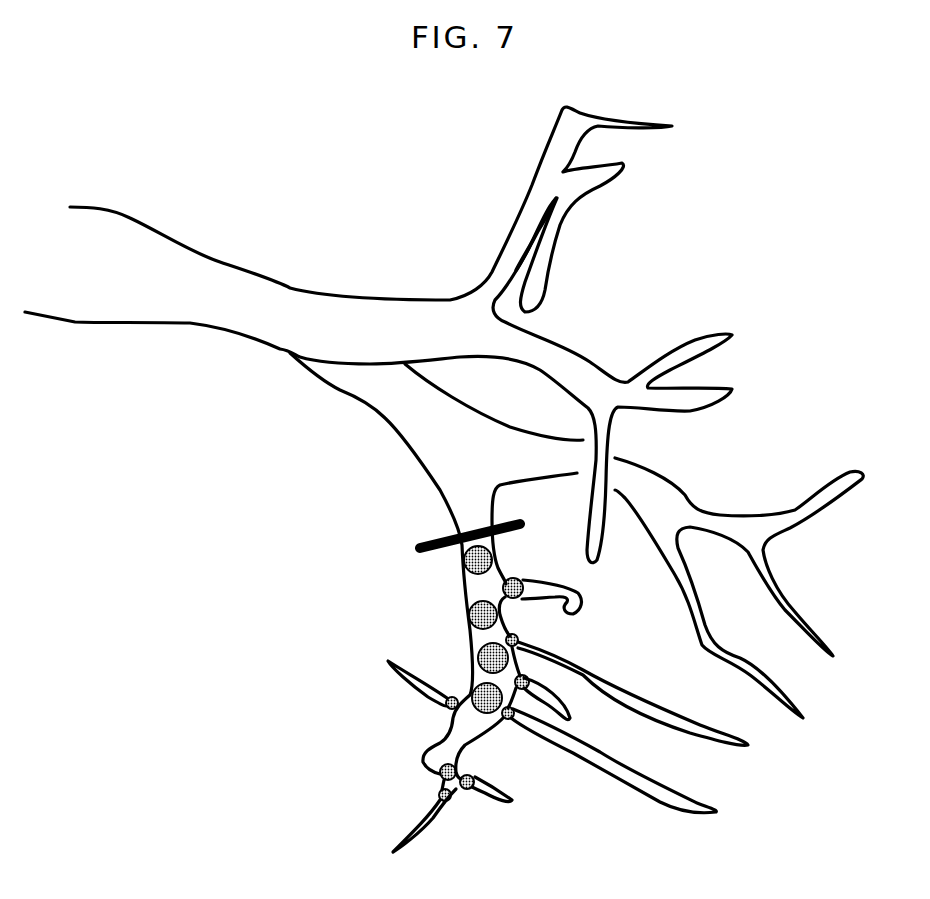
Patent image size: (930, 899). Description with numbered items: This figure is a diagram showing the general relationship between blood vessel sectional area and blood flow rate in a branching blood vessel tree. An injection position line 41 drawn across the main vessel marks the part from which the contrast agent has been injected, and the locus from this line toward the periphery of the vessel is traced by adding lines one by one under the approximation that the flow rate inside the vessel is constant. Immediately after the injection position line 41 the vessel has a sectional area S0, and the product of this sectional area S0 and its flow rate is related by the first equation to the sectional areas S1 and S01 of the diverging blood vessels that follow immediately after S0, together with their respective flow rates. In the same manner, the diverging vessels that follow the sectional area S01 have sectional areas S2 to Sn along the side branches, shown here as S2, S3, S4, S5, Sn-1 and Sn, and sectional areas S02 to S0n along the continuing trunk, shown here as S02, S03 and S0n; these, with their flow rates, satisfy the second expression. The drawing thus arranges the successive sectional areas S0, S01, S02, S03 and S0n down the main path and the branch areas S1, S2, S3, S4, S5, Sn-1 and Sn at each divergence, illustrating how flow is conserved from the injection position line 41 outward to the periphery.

The injection position line 41 is at (433, 546).
The sectional area of the blood vessel immediately after the injection position line S0 is at (463, 557).
The sectional area of diverging blood vessel S01 is at (468, 611).
The sectional area of diverging blood vessel S02 is at (477, 652).
The sectional area of diverging blood vessel S03 is at (471, 690).
The sectional area of diverging blood vessel S0n is at (440, 769).
The sectional area of diverging blood vessel S1 is at (517, 578).
The sectional area of diverging blood vessel S2 is at (518, 640).
The sectional area of diverging blood vessel S3 is at (529, 680).
The sectional area of diverging blood vessel S4 is at (446, 705).
The sectional area of diverging blood vessel S5 is at (510, 718).
The sectional area of diverging blood vessel Sn-1 is at (470, 790).
The sectional area of diverging blood vessel Sn is at (440, 799).